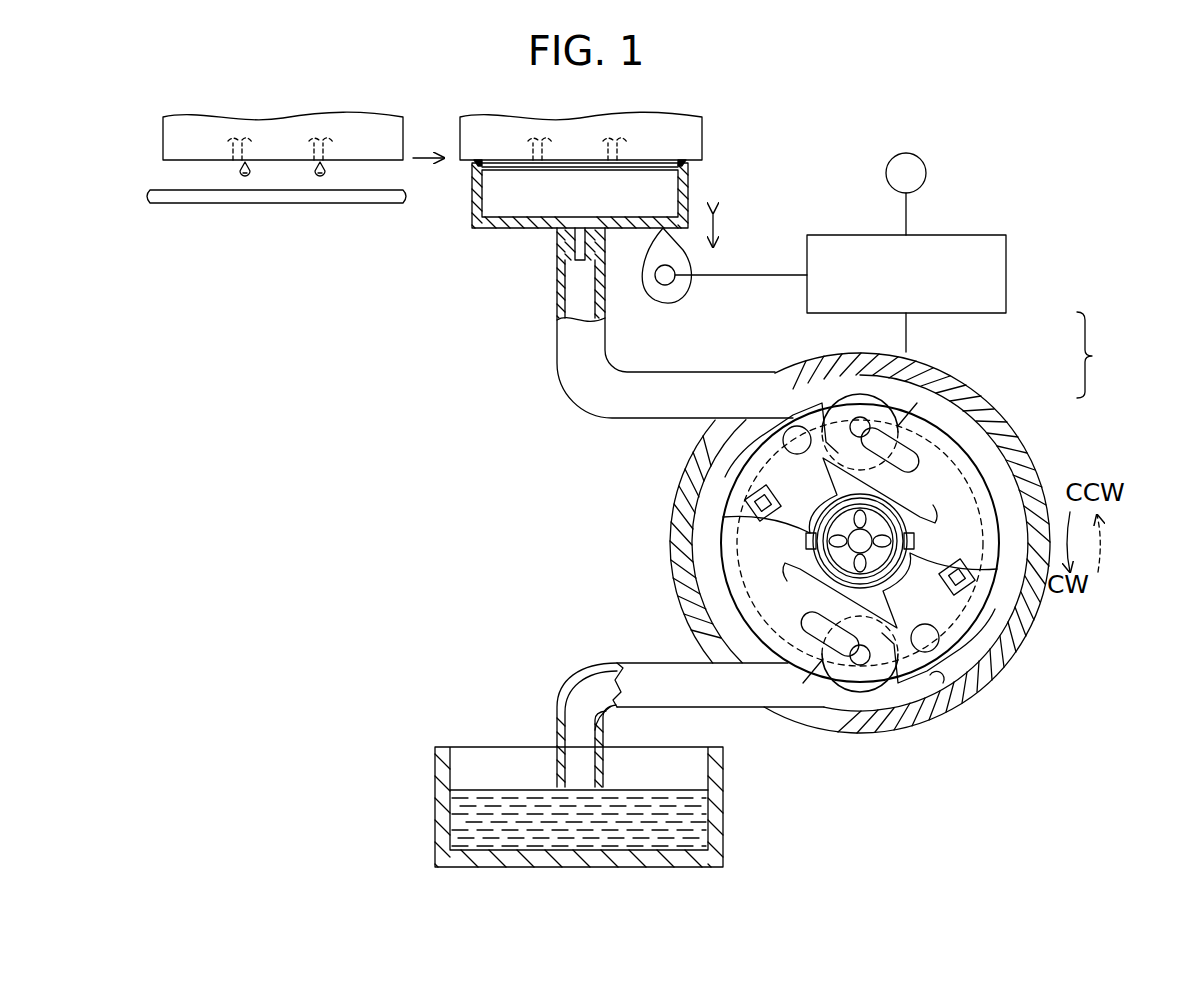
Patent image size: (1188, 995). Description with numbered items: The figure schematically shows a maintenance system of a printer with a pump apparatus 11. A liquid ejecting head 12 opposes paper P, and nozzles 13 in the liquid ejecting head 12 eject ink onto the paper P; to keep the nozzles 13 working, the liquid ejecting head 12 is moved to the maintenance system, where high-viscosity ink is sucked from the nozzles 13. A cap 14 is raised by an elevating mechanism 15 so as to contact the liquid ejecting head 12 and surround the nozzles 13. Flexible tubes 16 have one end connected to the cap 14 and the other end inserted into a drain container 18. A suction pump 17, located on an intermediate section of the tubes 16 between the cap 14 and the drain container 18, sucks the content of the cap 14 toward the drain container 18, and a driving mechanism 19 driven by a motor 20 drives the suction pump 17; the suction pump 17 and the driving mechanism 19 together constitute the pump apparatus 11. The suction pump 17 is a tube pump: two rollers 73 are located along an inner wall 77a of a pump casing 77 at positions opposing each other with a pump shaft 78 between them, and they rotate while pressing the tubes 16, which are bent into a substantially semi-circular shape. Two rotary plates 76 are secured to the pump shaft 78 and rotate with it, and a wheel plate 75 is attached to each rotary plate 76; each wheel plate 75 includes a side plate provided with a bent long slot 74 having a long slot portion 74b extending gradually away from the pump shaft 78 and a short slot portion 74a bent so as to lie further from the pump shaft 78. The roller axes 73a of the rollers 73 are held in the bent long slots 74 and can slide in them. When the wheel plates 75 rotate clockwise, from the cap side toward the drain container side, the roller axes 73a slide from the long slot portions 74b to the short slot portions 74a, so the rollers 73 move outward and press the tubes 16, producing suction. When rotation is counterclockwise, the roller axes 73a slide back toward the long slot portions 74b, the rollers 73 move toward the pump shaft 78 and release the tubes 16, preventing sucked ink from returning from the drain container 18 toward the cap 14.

The pump apparatus 11 is at (1097, 355).
The liquid ejecting head 12 is at (163, 131).
The nozzles 13 is at (232, 149).
The cap 14 is at (688, 187).
The elevating mechanism 15 is at (688, 304).
The flexible tubes 16 is at (590, 410).
The suction pump 17 is at (1014, 417).
The drain container 18 is at (435, 762).
The driving mechanism 19 is at (1007, 300).
The motor 20 is at (926, 175).
The rollers 73 is at (858, 392).
The roller axes 73a is at (863, 666).
The bent long slot 74 is at (760, 768).
The short slot portion 74a is at (853, 664).
The long slot portion 74b is at (808, 666).
The wheel plate 75 is at (737, 573).
The rotary plates 76 is at (747, 473).
The pump casing 77 is at (992, 668).
The inner wall 77a is at (940, 688).
The pump shaft 78 is at (806, 539).
The paper P is at (218, 205).